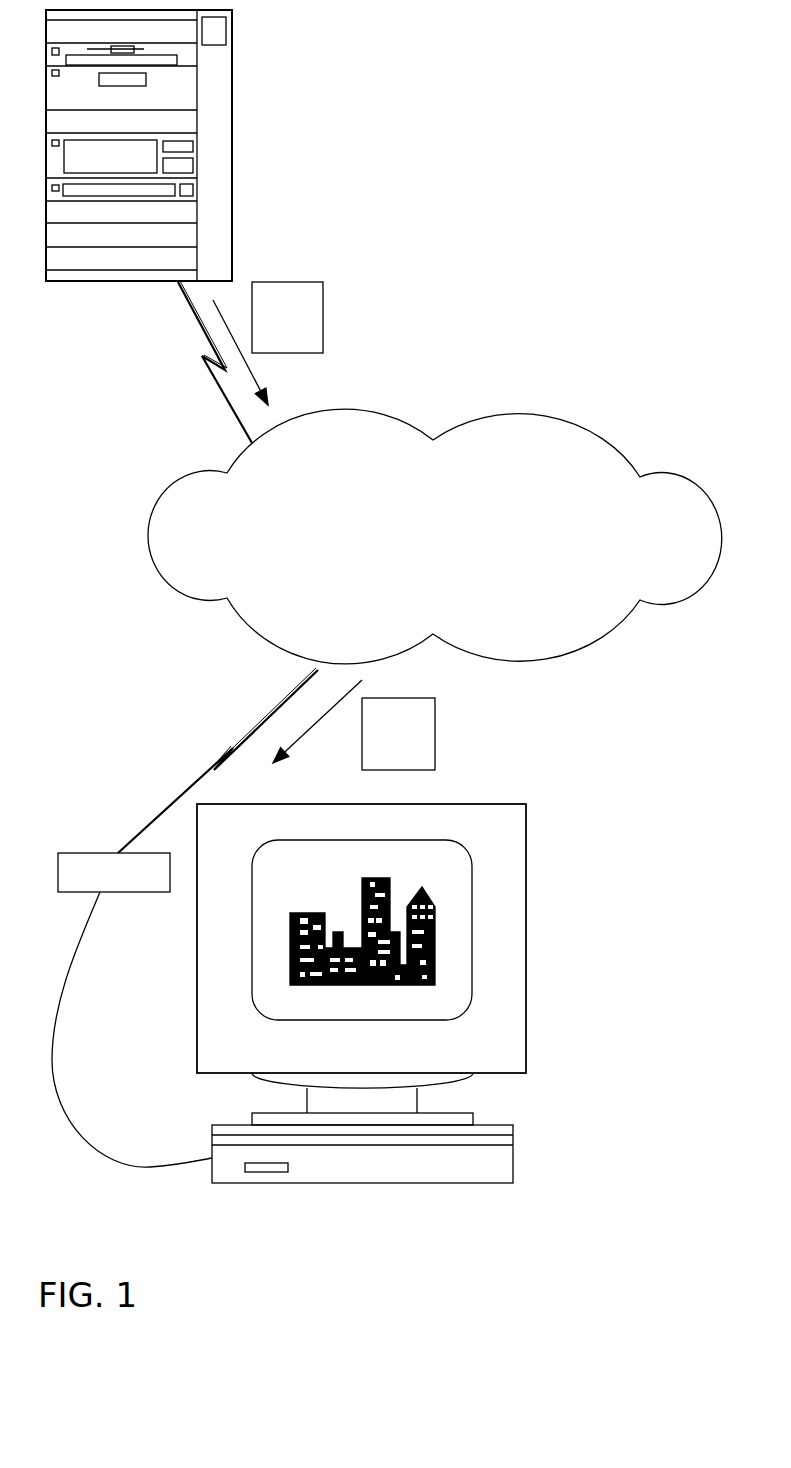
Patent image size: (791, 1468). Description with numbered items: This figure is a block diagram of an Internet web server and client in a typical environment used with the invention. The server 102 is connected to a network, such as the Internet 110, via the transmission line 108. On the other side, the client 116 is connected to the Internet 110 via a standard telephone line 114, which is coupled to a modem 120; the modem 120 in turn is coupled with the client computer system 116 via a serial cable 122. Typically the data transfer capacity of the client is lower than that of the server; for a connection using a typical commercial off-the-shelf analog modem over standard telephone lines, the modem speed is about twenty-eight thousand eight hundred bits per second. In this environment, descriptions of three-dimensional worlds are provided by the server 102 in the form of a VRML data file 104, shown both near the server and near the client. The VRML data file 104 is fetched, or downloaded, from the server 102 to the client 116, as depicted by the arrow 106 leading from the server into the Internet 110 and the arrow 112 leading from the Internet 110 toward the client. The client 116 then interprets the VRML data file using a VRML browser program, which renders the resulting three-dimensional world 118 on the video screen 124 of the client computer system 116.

The server 102 is at (177, 161).
The VRML data file 104 is at (362, 496).
The arrow 106 is at (270, 352).
The transmission line 108 is at (197, 362).
The Internet 110 is at (435, 518).
The arrow 112 is at (317, 731).
The standard telephone line 114 is at (218, 760).
The client computer system 116 is at (402, 1165).
The 3D world 118 is at (400, 943).
The modem 120 is at (114, 905).
The serial cable 122 is at (132, 1029).
The video screen 124 is at (399, 964).